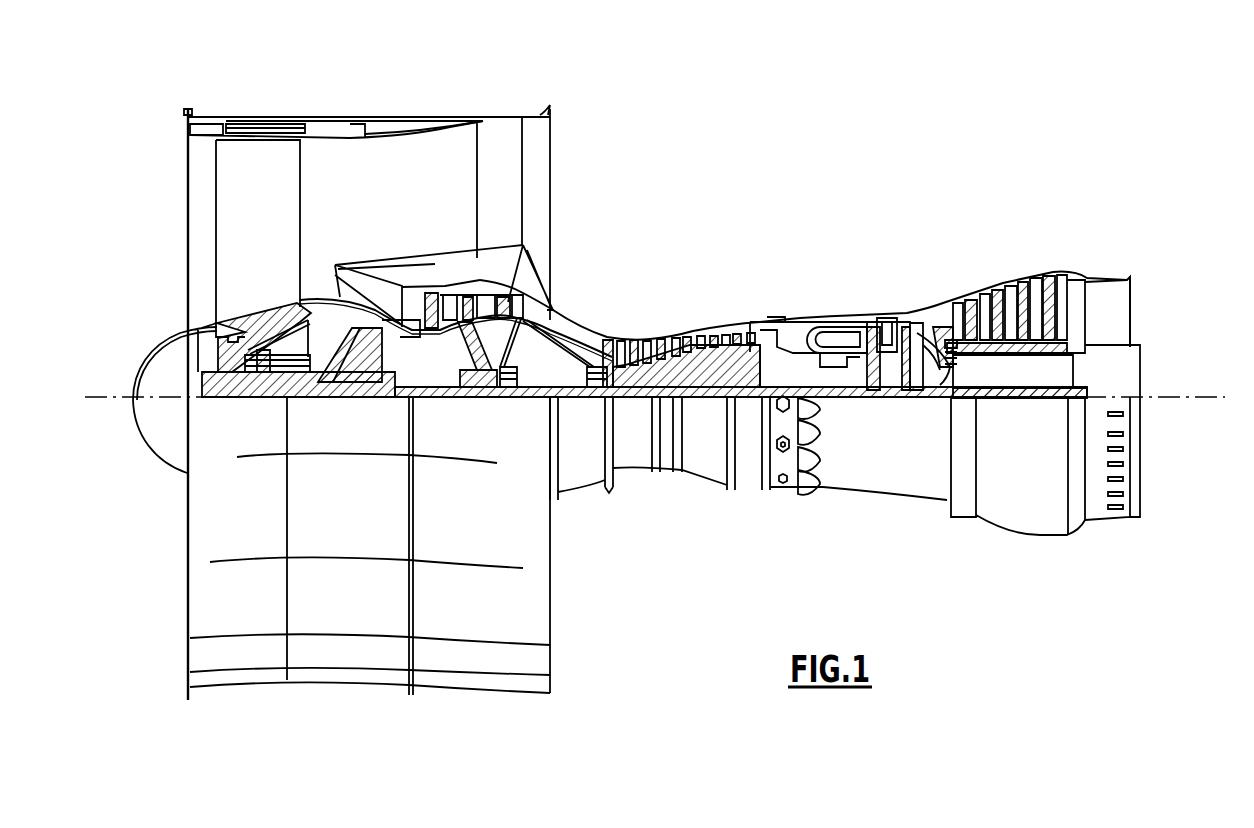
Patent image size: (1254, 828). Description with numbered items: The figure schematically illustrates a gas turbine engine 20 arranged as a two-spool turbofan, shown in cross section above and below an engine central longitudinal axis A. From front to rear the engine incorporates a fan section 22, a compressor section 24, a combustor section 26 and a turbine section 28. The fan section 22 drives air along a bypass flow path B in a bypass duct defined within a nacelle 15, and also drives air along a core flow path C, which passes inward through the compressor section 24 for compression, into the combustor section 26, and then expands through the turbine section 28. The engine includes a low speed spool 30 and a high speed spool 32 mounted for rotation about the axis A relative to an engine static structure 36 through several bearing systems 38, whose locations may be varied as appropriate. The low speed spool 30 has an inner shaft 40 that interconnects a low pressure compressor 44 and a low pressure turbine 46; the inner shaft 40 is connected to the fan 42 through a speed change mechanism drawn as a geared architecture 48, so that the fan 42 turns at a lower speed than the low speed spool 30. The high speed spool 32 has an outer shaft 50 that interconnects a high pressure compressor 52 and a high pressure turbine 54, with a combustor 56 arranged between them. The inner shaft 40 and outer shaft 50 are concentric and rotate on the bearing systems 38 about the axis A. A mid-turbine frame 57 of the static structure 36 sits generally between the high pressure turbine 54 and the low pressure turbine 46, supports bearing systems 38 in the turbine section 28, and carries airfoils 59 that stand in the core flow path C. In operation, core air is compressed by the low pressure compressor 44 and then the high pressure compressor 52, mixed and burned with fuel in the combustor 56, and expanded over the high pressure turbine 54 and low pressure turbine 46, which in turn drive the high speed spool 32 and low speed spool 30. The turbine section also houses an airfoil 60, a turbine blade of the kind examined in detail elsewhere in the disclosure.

The gas turbine engine 20 is at (830, 163).
The fan section 22 is at (302, 103).
The nacelle 15 is at (366, 120).
The compressor section 24 is at (598, 308).
The combustor section 26 is at (820, 297).
The turbine section 28 is at (970, 257).
The low speed spool 30 is at (708, 400).
The high speed spool 32 is at (752, 350).
The engine static structure 36 is at (748, 490).
The bearing systems 38 is at (505, 390).
The inner shaft 40 is at (565, 397).
The fan 42 is at (271, 243).
The low pressure compressor 44 is at (470, 310).
The low pressure turbine 46 is at (1017, 293).
The geared architecture 48 is at (370, 390).
The outer shaft 50 is at (837, 390).
The high pressure compressor 52 is at (685, 330).
The high pressure turbine 54 is at (890, 320).
The combustor 56 is at (823, 333).
The mid-turbine frame 57 is at (932, 308).
The airfoils 59 is at (957, 358).
The airfoil 60 is at (960, 303).
The engine central longitudinal axis A is at (1222, 397).
The bypass flow path B is at (337, 190).
The core flow path C is at (378, 298).